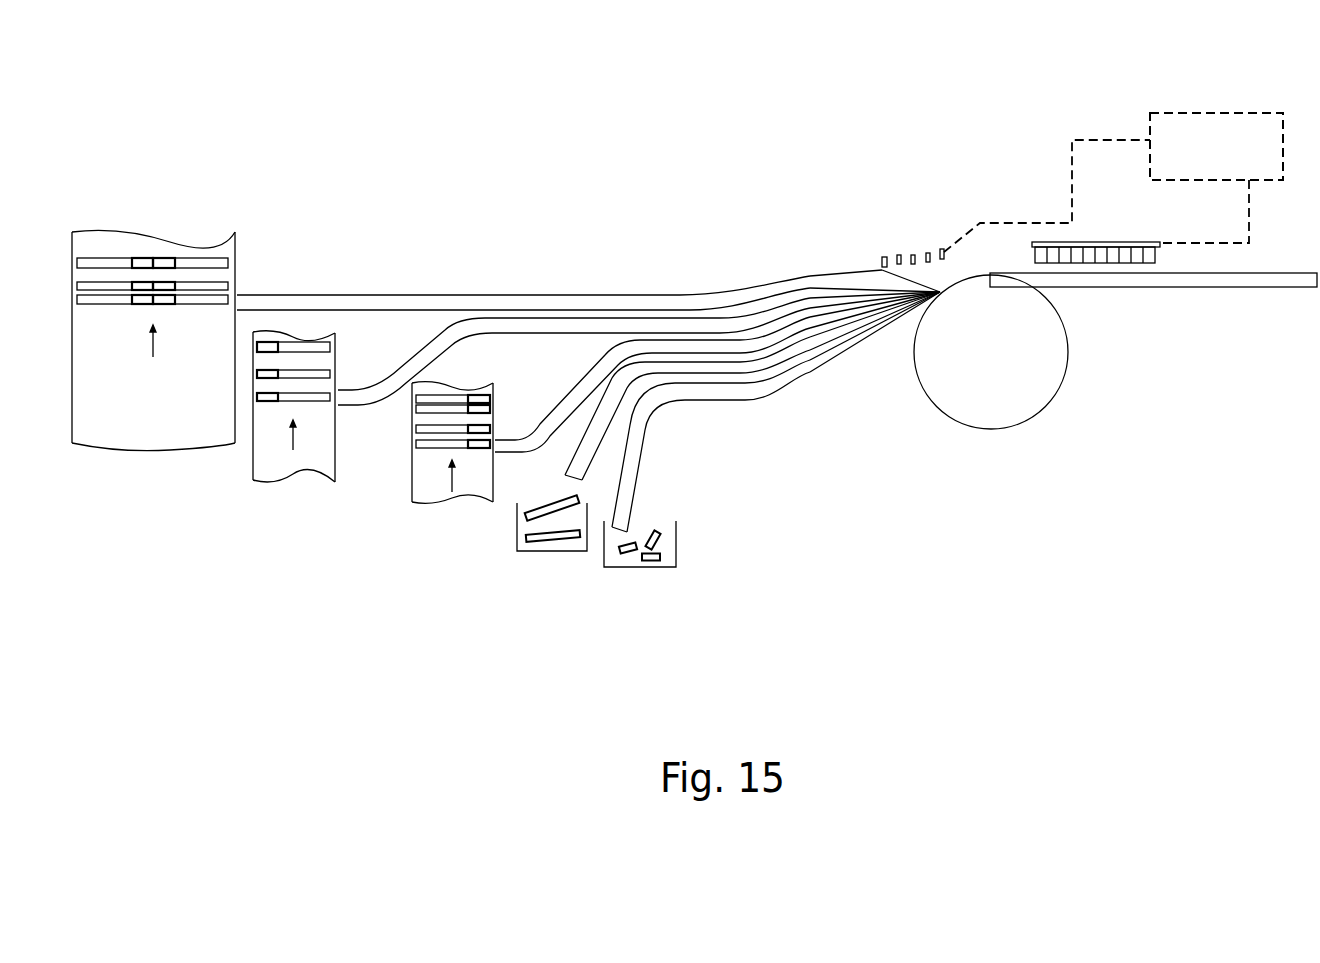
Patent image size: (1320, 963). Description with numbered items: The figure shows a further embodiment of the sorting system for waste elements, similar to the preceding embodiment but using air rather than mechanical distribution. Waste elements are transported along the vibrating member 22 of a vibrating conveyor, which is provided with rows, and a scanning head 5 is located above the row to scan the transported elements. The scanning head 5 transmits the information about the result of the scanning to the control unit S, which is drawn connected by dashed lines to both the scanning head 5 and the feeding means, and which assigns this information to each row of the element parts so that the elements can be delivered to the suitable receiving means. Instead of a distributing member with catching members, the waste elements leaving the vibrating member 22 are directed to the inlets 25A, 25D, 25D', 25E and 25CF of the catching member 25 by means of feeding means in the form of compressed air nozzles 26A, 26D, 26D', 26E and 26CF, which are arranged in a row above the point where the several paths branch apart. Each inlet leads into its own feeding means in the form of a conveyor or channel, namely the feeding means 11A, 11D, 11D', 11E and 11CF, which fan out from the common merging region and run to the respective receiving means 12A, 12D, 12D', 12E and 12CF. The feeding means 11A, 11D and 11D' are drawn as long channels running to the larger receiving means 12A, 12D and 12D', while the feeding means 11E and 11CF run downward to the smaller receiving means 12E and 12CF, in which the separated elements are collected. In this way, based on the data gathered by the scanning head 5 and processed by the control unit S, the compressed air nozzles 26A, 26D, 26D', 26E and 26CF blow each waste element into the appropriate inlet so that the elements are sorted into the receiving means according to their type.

The receiving means 12A is at (223, 248).
The receiving means 12D is at (257, 421).
The receiving means 12D' is at (411, 472).
The receiving means 12E is at (517, 549).
The receiving means 12CF is at (613, 565).
The feeding means 11A is at (360, 302).
The feeding means 11D is at (574, 318).
The feeding means 11D' is at (652, 343).
The feeding means 11E is at (608, 415).
The feeding means 11CF is at (627, 508).
The catching member 25 is at (846, 260).
The inlet 25A is at (884, 270).
The inlet 25D is at (875, 194).
The inlet 25D' is at (866, 342).
The inlet 25E is at (922, 287).
The inlet 25CF is at (933, 293).
The compressed air nozzle 26A is at (882, 257).
The compressed air nozzle 26D is at (922, 167).
The compressed air nozzle 26D' is at (946, 184).
The compressed air nozzle 26E is at (928, 253).
The compressed air nozzle 26CF is at (943, 250).
The scanning head 5 is at (1085, 245).
The vibrating member 22 is at (1207, 282).
The control unit S is at (1113, 182).